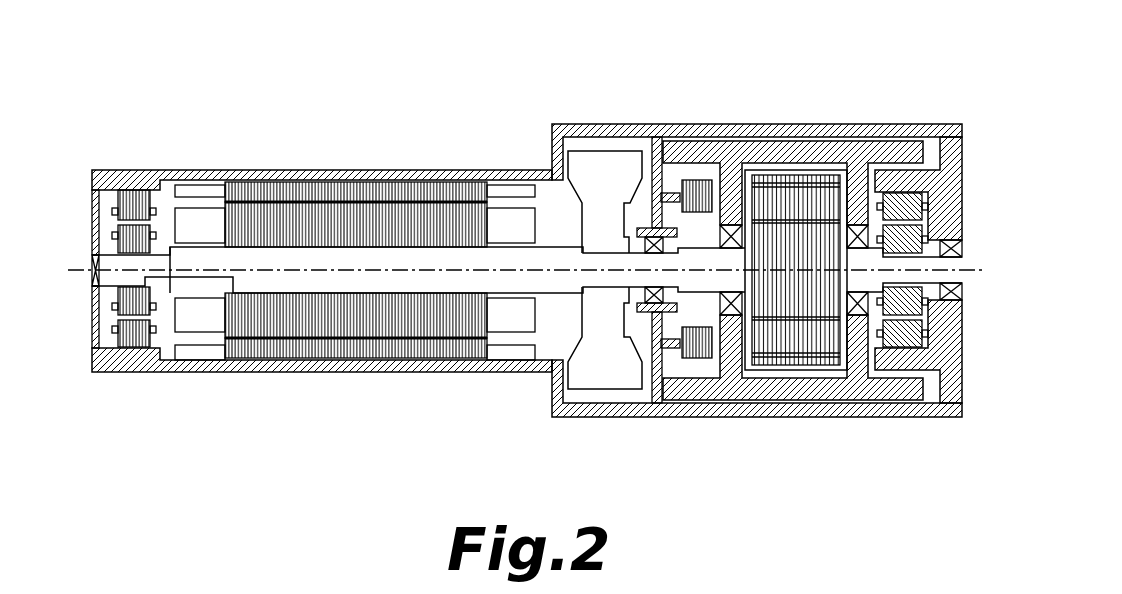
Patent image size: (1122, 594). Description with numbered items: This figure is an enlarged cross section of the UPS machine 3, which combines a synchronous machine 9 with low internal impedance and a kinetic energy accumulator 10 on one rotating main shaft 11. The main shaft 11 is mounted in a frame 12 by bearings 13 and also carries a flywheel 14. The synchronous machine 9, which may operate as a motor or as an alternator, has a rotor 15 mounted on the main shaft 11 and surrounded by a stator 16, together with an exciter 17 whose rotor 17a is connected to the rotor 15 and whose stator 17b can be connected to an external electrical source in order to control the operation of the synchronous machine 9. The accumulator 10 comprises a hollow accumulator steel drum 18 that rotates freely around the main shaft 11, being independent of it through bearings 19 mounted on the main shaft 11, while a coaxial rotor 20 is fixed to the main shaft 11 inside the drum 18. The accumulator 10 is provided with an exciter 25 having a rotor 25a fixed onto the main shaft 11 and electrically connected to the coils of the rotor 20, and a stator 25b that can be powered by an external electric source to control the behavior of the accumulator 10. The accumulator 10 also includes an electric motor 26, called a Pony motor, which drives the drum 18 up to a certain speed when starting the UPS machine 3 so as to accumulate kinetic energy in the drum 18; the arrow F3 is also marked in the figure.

The UPS machine 3 is at (926, 75).
The synchronous machine 9 is at (92, 428).
The kinetic energy accumulator 10 is at (762, 320).
The main shaft 11 is at (497, 262).
The frame 12 is at (150, 176).
The bearings 13 is at (92, 262).
The flywheel 14 is at (600, 172).
The rotor 15 is at (273, 220).
The stator 16 is at (348, 190).
The exciter 17 is at (145, 269).
The exciter rotor 17a is at (148, 243).
The exciter stator 17b is at (135, 338).
The accumulator steel drum 18 is at (737, 152).
The bearings 19 is at (853, 308).
The coaxial rotor 20 is at (783, 205).
The exciter 25 is at (924, 292).
The exciter rotor 25a is at (885, 307).
The exciter stator 25b is at (903, 338).
The electric motor 26 is at (702, 200).
The axial force F3 is at (806, 178).